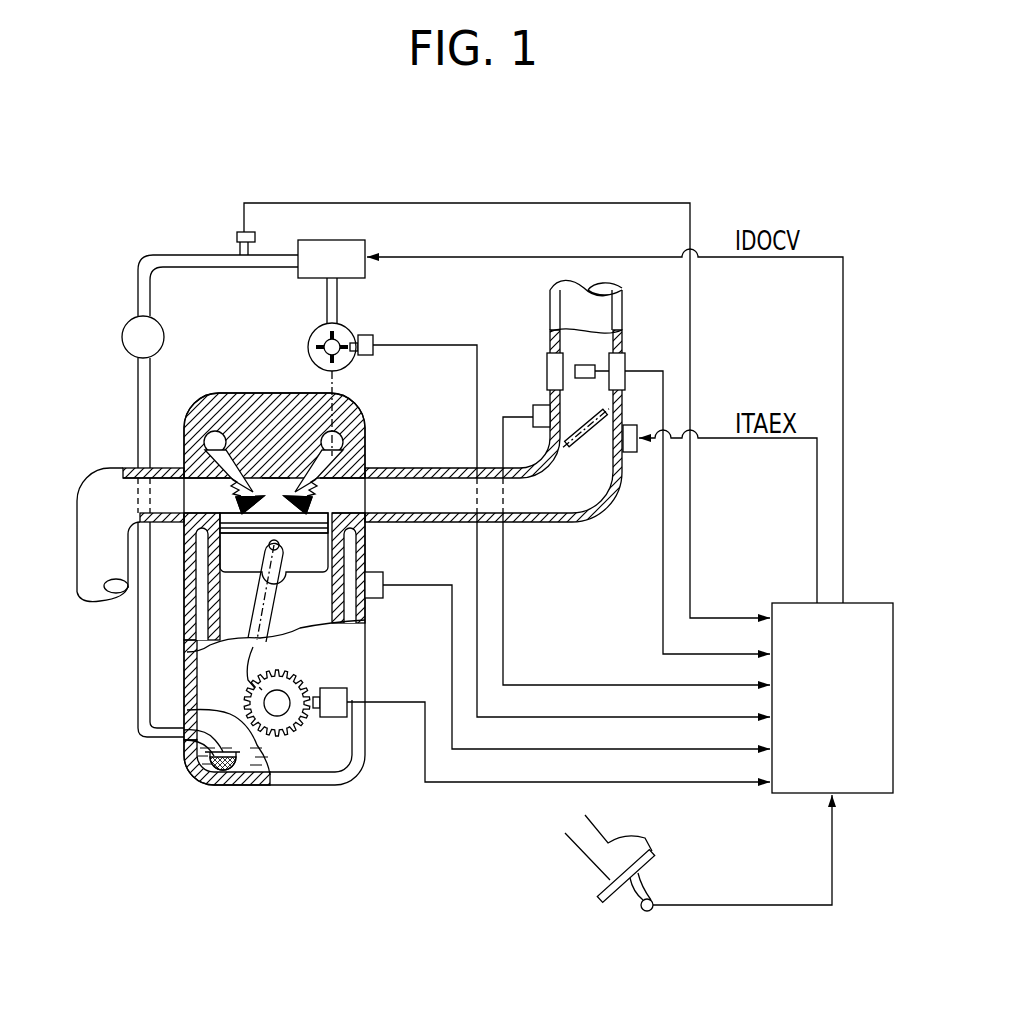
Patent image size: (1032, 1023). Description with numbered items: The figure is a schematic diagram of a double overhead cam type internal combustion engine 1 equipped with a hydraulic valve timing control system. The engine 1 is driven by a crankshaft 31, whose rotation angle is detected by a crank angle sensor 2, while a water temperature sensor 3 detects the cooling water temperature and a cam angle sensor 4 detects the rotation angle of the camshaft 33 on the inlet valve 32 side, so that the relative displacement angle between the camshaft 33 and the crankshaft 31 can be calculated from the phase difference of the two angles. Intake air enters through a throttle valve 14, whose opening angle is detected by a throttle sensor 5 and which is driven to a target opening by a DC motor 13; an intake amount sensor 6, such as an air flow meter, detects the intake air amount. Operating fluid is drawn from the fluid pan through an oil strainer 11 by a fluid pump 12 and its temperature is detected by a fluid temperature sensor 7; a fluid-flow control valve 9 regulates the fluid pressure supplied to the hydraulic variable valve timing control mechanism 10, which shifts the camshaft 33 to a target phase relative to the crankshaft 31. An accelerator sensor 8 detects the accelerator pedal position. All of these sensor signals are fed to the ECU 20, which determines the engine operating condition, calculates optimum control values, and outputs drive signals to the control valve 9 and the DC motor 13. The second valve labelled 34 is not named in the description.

The internal combustion engine 1 is at (191, 391).
The crank angle sensor 2 is at (345, 690).
The water temperature sensor 3 is at (384, 578).
The cam angle sensor 4 is at (377, 353).
The throttle sensor 5 is at (533, 407).
The intake amount sensor 6 is at (546, 368).
The fluid temperature sensor 7 is at (237, 236).
The accelerator sensor 8 is at (643, 910).
The fluid-flow control valve 9 is at (367, 245).
The hydraulic variable valve timing control mechanism 10 is at (374, 366).
The oil strainer 11 is at (176, 744).
The fluid pump 12 is at (124, 328).
The DC motor 13 is at (637, 454).
The throttle valve 14 is at (574, 447).
The ECU 20 is at (876, 602).
The crankshaft 31 is at (280, 708).
The inlet valve 32 is at (290, 487).
The camshaft 33 is at (340, 353).
The intake valve 34 is at (253, 482).